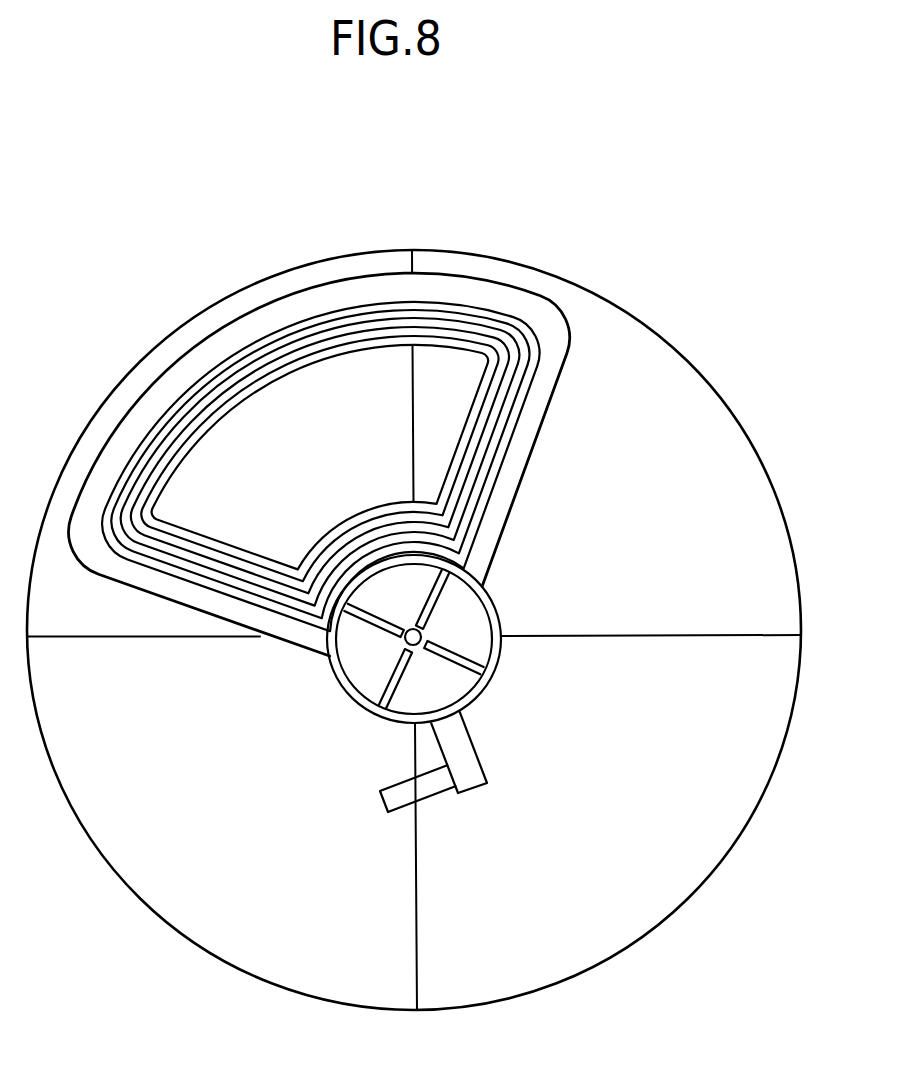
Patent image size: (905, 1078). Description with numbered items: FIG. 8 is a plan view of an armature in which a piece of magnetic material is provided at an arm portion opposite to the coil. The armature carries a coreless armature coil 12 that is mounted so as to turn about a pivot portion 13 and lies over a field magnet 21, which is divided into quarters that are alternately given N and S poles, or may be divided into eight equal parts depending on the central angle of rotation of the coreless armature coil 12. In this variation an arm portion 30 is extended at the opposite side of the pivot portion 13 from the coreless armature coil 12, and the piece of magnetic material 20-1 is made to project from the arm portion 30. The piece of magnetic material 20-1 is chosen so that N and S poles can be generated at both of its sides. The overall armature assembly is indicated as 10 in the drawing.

The antenna coil 10 is at (508, 298).
The coreless armature coil 12 is at (293, 337).
The pivot portion 13 is at (499, 598).
The field magnet 21 is at (738, 396).
The arm portion 30 is at (480, 753).
The piece of magnetic material 20-1 is at (380, 798).